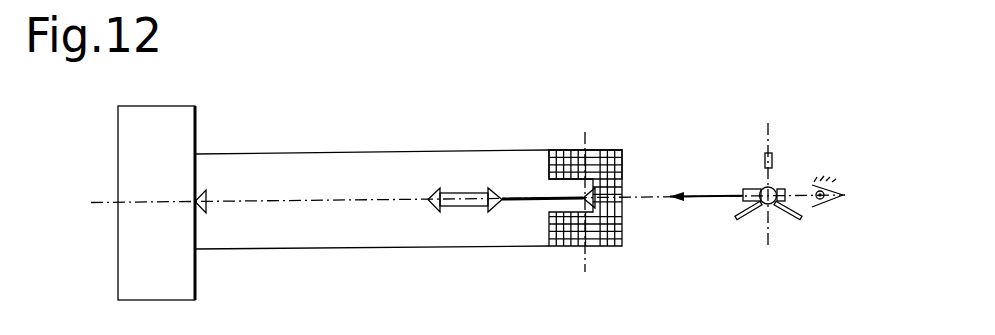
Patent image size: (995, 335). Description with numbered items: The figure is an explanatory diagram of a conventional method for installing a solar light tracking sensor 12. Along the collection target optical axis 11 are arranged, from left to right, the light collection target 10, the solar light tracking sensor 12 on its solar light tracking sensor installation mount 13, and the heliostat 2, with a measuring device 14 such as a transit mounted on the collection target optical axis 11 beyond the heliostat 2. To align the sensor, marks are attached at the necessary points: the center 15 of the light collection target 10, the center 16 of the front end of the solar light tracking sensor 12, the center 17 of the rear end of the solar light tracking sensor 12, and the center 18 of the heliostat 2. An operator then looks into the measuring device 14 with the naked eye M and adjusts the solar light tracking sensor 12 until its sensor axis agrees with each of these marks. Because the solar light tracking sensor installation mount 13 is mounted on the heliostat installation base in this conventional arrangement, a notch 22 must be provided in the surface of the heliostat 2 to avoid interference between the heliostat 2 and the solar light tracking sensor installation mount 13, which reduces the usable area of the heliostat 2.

The heliostat 2 is at (592, 150).
The light collection target 10 is at (201, 176).
The collection target optical axis 11 is at (641, 198).
The solar light tracking sensor 12 is at (445, 178).
The solar light tracking sensor installation mount 13 is at (526, 207).
The measuring device 14 is at (770, 172).
The center of the light collection target 15 is at (207, 205).
The center of the front end of the solar light tracking sensor 16 is at (428, 200).
The center of the rear end of the solar light tracking sensor 17 is at (484, 195).
The center of the heliostat 18 is at (568, 247).
The notch 22 is at (567, 165).
The naked eye M is at (825, 215).